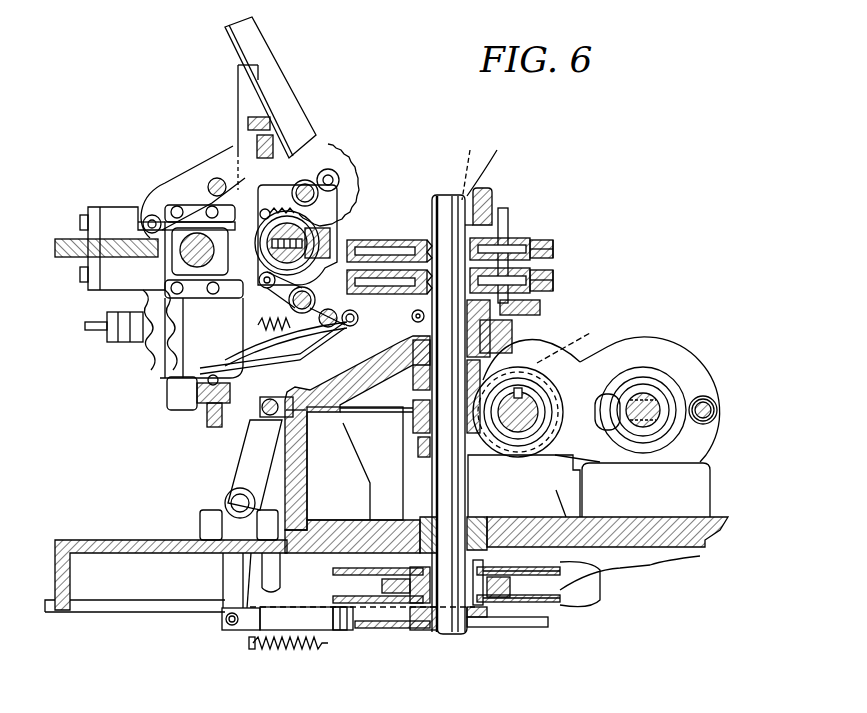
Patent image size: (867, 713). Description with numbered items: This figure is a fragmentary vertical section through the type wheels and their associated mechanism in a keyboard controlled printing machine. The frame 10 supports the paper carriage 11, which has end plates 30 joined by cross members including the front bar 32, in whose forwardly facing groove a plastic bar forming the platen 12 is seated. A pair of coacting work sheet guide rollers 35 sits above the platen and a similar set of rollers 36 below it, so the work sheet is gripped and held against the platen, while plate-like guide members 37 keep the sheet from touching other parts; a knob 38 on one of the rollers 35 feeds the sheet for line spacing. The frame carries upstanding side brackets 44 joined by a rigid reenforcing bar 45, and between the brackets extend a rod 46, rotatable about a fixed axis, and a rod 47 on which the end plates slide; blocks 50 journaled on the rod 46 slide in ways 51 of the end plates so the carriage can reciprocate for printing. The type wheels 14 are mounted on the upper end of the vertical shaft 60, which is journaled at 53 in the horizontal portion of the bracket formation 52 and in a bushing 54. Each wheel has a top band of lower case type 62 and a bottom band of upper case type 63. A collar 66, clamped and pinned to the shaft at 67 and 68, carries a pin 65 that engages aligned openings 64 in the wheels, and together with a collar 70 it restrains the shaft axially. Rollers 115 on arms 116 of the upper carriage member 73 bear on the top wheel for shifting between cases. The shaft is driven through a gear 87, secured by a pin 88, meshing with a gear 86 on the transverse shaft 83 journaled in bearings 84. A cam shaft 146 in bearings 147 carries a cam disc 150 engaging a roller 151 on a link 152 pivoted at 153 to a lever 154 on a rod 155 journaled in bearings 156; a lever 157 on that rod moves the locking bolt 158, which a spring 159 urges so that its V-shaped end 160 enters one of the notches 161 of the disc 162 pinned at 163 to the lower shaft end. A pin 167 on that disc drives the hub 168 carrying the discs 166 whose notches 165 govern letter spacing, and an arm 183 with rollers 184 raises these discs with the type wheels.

The frame 10 is at (66, 540).
The paper carriage 11 is at (306, 135).
The platen 12 is at (335, 238).
The type wheels 14 is at (545, 242).
The end plates 30 is at (248, 297).
The frame member or bar 32 is at (218, 180).
The work sheet guide rollers 35 is at (330, 185).
The rollers 36 is at (290, 300).
The plate-like guide members 37 is at (360, 240).
The knob 38 is at (358, 178).
The side brackets 44 is at (116, 212).
The reenforcing bar 45 is at (98, 234).
The rod 46 is at (182, 255).
The rod 47 is at (270, 245).
The blocks 50 is at (152, 292).
The ways 51 is at (138, 226).
The bracket formation 52 is at (306, 472).
The journal 53 is at (515, 332).
The bushing 54 is at (535, 513).
The shaft 60 is at (446, 196).
The top band of type 62 is at (553, 245).
The bottom bands of type 63 is at (555, 256).
The openings 64 is at (520, 240).
The pin or rod 65 is at (506, 215).
The collar 66 is at (540, 308).
The clamp 67 is at (412, 318).
The pin 68 is at (405, 352).
The collar 70 is at (410, 403).
The upper carriage member 73 is at (483, 188).
The shaft 83 is at (522, 425).
The bearings 84 is at (555, 503).
The gear 86 is at (547, 351).
The gear 87 is at (413, 425).
The pin 88 is at (418, 450).
The rollers 115 is at (476, 167).
The arms 116 is at (493, 163).
The cam shaft 146 is at (638, 428).
The bearings 147 is at (646, 490).
The cam disc 150 is at (660, 380).
The roller 151 is at (712, 402).
The link 152 is at (612, 350).
The pivotal connection 153 is at (262, 408).
The lever 154 is at (242, 468).
The rod 155 is at (226, 498).
The bearings 156 is at (210, 518).
The lever 157 is at (233, 568).
The locking bolt 158 is at (243, 626).
The spring 159 is at (278, 650).
The V-shaped end 160 is at (343, 632).
The notches 161 is at (365, 630).
The disc 162 is at (405, 632).
The pin 163 is at (456, 634).
The notches 165 is at (590, 580).
The disc 166 is at (521, 573).
The pin 167 is at (487, 582).
The hub 168 is at (418, 578).
The arm 183 is at (360, 570).
The rollers 184 is at (382, 586).